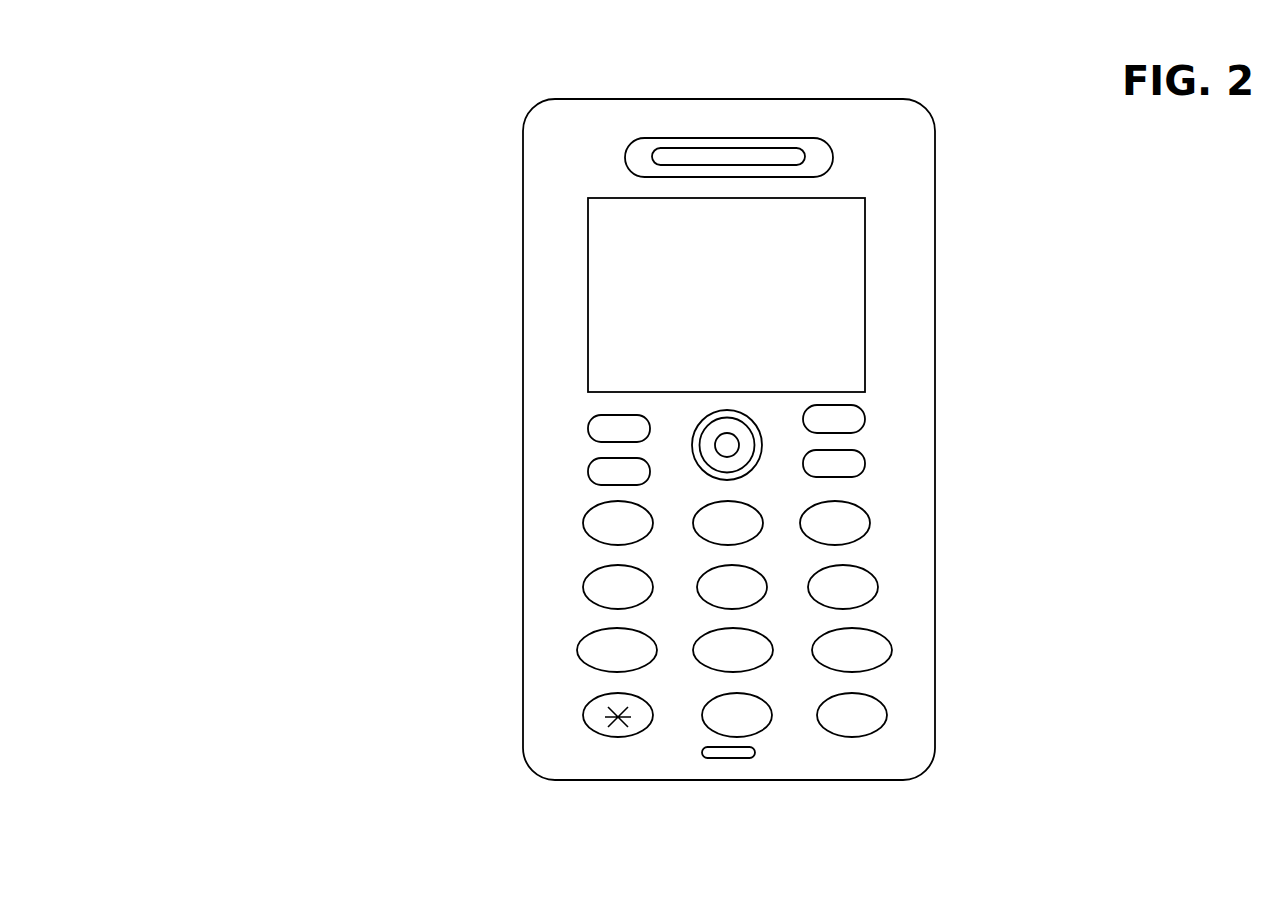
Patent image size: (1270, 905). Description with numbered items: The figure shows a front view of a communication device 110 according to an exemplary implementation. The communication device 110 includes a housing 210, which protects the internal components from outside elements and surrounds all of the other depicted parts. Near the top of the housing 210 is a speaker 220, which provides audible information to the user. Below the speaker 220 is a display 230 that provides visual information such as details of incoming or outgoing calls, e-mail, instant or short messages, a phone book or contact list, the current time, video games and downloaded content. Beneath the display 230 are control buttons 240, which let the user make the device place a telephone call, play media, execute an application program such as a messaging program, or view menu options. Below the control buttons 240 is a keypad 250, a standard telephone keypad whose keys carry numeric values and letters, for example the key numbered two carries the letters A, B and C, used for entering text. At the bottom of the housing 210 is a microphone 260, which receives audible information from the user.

The communication device 110 is at (232, 77).
The housing 210 is at (522, 142).
The speaker 220 is at (834, 153).
The display 230 is at (866, 300).
The control buttons 240 is at (882, 413).
The keypad 250 is at (903, 708).
The microphone 260 is at (733, 760).